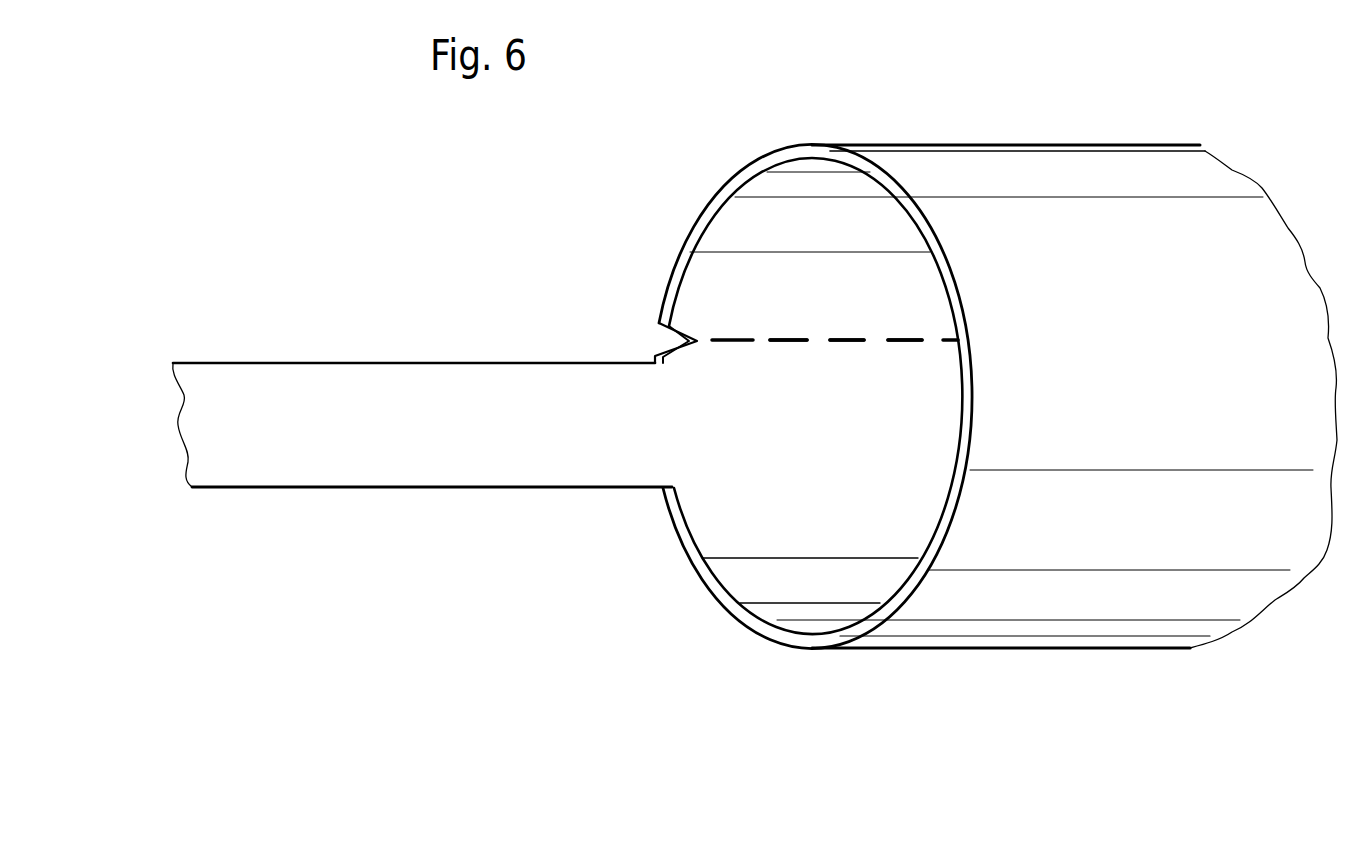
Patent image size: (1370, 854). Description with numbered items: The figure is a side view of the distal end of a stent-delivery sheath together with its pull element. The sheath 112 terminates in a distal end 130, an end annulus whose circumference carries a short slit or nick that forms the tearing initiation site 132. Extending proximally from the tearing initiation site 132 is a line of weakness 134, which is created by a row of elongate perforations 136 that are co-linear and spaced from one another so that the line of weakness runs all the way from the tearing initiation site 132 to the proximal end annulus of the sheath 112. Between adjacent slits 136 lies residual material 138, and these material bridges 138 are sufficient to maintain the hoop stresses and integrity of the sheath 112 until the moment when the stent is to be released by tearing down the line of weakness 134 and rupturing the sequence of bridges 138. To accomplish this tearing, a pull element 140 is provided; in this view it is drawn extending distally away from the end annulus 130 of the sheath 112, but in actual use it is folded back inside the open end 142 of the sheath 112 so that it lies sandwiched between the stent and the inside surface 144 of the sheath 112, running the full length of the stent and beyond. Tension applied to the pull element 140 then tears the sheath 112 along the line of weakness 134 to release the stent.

The sheath 112 is at (1135, 604).
The distal end 130 is at (810, 650).
The tearing initiation site 132 is at (668, 340).
The line of weakness 134 is at (795, 325).
The elongate perforations 136 is at (850, 345).
The residual material 138 is at (760, 345).
The pull element 140 is at (412, 455).
The open end 142 is at (874, 500).
The inside surface 144 is at (797, 606).